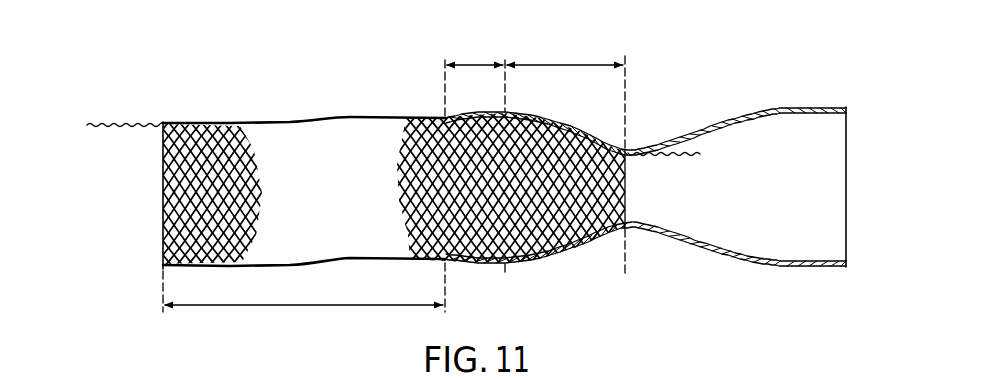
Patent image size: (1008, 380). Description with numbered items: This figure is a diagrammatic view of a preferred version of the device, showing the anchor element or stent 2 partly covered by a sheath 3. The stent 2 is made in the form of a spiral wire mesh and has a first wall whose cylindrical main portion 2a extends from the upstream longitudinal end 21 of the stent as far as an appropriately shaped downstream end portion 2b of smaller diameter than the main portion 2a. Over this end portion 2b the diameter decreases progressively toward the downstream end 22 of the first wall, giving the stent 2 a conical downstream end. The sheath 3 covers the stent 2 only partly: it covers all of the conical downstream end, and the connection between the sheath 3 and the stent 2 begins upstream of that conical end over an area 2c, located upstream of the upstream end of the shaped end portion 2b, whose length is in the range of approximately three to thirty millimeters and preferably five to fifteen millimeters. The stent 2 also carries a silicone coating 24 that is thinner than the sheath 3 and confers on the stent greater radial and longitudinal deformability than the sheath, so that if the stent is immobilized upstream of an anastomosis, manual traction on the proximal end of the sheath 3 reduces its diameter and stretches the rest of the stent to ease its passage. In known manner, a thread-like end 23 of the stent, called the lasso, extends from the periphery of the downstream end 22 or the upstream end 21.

The stent 2 is at (310, 117).
The upstream longitudinal end 21 is at (148, 214).
The downstream end 22 is at (631, 189).
The thread-like end 23 is at (708, 173).
The silicone coating 24 is at (262, 122).
The sheath 3 is at (779, 107).
The main portion 2a is at (304, 287).
The downstream end portion 2b is at (566, 162).
The connection area 2c is at (475, 162).